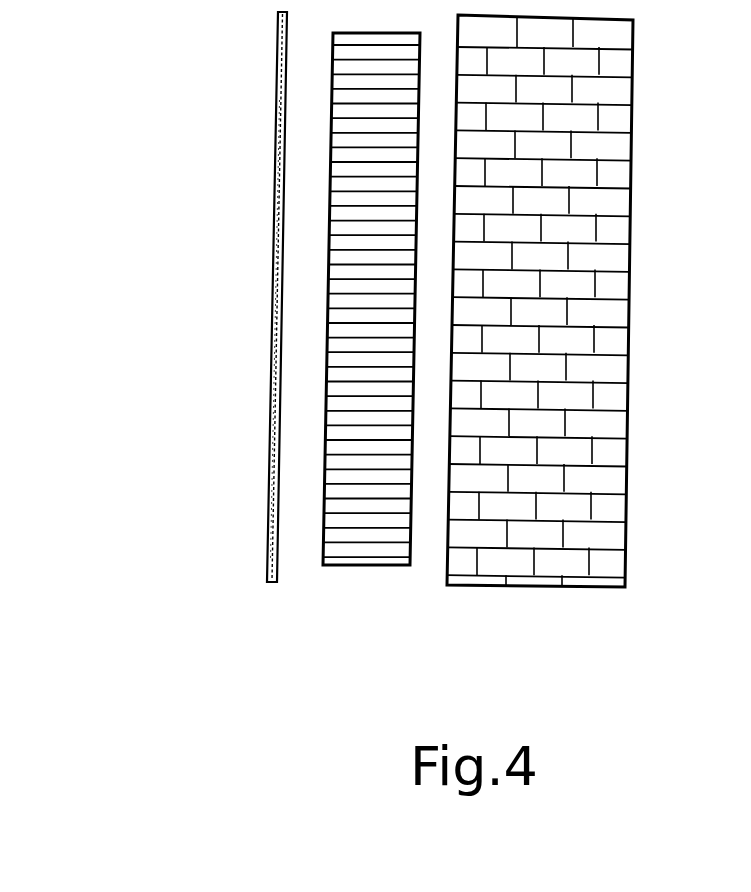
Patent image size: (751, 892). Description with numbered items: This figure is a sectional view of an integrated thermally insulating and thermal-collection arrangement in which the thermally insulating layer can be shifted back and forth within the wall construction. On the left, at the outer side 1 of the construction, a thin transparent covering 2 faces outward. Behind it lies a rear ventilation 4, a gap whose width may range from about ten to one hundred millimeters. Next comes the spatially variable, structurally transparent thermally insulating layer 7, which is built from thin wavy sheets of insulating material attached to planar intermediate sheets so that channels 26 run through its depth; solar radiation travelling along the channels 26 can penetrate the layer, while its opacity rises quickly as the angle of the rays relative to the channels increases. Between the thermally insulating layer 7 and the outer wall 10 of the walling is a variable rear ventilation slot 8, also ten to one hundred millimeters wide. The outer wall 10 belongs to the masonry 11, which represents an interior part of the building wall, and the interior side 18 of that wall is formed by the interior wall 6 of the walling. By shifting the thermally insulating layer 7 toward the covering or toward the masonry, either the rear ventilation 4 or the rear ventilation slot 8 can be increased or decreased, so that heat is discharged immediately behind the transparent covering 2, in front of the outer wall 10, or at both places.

The outer side 1 is at (249, 185).
The transparent covering 2 is at (272, 414).
The rear ventilation 4 is at (305, 471).
The channels 26 is at (350, 97).
The structurally transparent thermally insulating layer 7 is at (362, 552).
The rear ventilation slot 8 is at (429, 545).
The interior wall 6 is at (627, 492).
The outer wall 10 is at (458, 197).
The masonry 11 is at (586, 118).
The interior side 18 is at (656, 340).